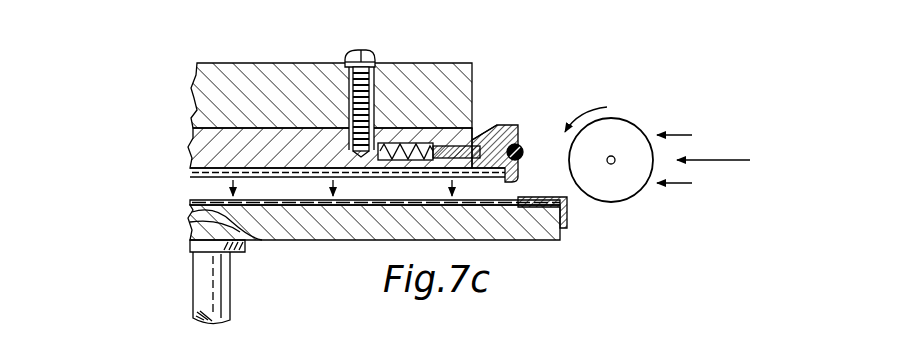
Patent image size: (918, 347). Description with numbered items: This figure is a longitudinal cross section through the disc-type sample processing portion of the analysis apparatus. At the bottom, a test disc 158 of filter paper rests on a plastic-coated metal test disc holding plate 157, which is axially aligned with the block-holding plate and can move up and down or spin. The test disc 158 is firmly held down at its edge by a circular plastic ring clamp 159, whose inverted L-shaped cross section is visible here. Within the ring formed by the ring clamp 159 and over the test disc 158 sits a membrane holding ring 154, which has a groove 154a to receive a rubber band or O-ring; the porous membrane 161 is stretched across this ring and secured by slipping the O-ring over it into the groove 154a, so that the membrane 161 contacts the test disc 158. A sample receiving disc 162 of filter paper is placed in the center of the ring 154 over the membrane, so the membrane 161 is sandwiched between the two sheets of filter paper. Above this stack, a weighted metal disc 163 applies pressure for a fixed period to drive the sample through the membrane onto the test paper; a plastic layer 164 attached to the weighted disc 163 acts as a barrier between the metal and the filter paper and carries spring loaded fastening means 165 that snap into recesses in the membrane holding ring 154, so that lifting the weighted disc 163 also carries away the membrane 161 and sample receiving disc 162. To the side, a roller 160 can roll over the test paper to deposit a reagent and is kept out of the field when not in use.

The membrane holding ring 154 is at (500, 130).
The groove 154a is at (498, 138).
The test disc holding plate 157 is at (355, 243).
The test disc 158 is at (195, 207).
The ring clamp 159 is at (568, 212).
The roller 160 is at (630, 121).
The porous membrane 161 is at (518, 170).
The sample receiving disc 162 is at (190, 171).
The weighted metal disc 163 is at (192, 92).
The plastic layer 164 is at (190, 140).
The spring loaded fastening means 165 is at (465, 142).